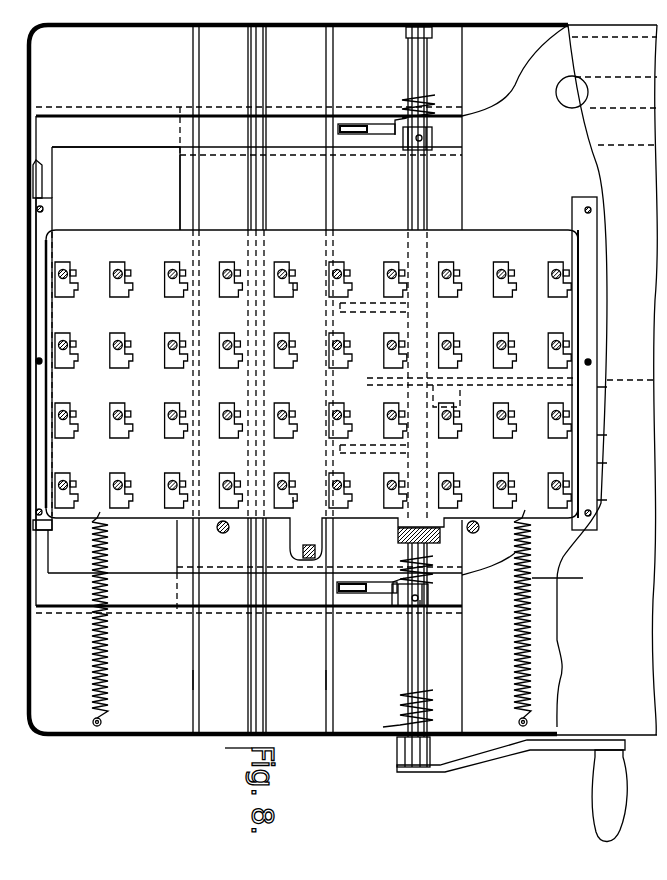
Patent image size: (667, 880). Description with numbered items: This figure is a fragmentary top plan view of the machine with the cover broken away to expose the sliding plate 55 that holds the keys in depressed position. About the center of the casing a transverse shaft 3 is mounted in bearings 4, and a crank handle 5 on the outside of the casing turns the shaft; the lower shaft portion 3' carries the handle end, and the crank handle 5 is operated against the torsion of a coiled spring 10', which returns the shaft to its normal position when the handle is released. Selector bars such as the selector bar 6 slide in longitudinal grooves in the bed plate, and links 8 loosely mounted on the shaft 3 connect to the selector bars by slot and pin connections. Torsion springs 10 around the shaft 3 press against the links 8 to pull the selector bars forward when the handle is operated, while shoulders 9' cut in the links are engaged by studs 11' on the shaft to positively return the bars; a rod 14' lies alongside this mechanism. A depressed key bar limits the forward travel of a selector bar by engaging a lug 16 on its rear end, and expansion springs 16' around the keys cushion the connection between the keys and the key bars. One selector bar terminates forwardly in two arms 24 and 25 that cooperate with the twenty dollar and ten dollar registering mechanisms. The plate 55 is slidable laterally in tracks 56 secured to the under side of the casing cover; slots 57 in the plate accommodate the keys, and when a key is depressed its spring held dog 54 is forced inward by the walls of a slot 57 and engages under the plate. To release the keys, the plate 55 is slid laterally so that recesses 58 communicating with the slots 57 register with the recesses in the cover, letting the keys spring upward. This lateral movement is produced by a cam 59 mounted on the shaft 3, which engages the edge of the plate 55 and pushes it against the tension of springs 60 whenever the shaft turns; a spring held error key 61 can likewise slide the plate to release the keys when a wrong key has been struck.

The transverse shaft 3 is at (429, 128).
The lower shaft portion 3' is at (403, 640).
The bearings 4 is at (383, 752).
The crank handle 5 is at (472, 770).
The selector bar 6 is at (133, 620).
The link 8 is at (372, 625).
The shoulder 9' is at (435, 632).
The torsion spring 10 is at (427, 352).
The coiled spring 10' is at (403, 710).
The stud 11' is at (407, 628).
The rod 14' is at (338, 688).
The lug 16 is at (26, 361).
The expansion spring 16' is at (180, 691).
The arm 24 is at (572, 93).
The arm 25 is at (570, 155).
The spring held dog 54 is at (147, 292).
The plate 55 is at (507, 238).
The tracks 56 is at (578, 220).
The slot 57 is at (334, 472).
The recess 58 is at (303, 510).
The cam 59 is at (385, 538).
The spring 60 is at (115, 655).
The error key 61 is at (307, 580).